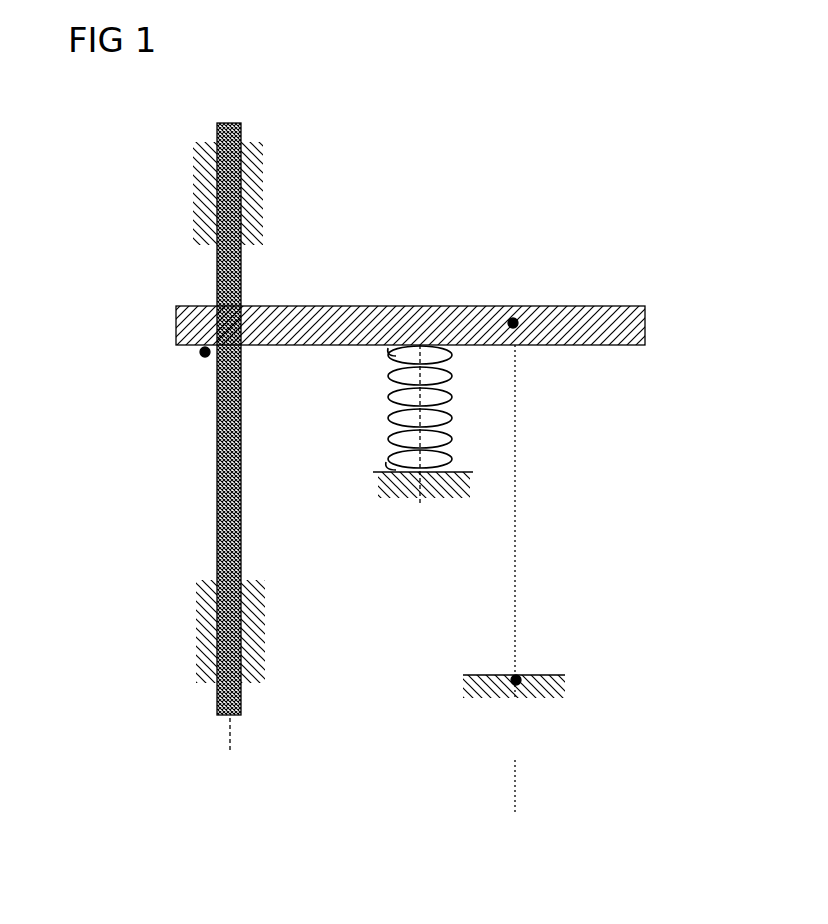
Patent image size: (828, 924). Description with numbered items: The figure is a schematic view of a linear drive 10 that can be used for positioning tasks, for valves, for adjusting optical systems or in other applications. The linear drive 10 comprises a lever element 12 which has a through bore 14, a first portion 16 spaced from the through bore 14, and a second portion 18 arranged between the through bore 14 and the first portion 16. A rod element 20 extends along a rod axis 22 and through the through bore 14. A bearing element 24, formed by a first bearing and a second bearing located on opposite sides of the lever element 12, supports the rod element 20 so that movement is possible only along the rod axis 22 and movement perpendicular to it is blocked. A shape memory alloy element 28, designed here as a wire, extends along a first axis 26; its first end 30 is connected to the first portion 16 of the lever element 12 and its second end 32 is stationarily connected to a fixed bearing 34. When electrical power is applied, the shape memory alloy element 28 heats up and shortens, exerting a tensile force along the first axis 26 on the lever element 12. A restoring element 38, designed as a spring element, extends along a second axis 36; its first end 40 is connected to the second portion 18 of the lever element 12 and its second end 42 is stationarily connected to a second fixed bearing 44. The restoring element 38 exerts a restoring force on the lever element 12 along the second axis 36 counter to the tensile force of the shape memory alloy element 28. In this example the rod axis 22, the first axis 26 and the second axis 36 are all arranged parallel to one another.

The linear drive 10 is at (608, 126).
The lever element 12 is at (622, 306).
The through bore 14 is at (203, 354).
The first portion 16 is at (515, 290).
The second portion 18 is at (420, 287).
The rod element 20 is at (218, 468).
The rod axis 22 is at (231, 90).
The bearing element 24 is at (196, 197).
The first axis 26 is at (515, 725).
The shape memory alloy element 28 is at (518, 520).
The first end 30 is at (516, 327).
The second end 32 is at (518, 674).
The fixed bearing 34 is at (563, 680).
The second axis 36 is at (420, 532).
The restoring element 38 is at (392, 413).
The first end 40 is at (390, 348).
The second end 42 is at (382, 471).
The second fixed bearing 44 is at (440, 494).